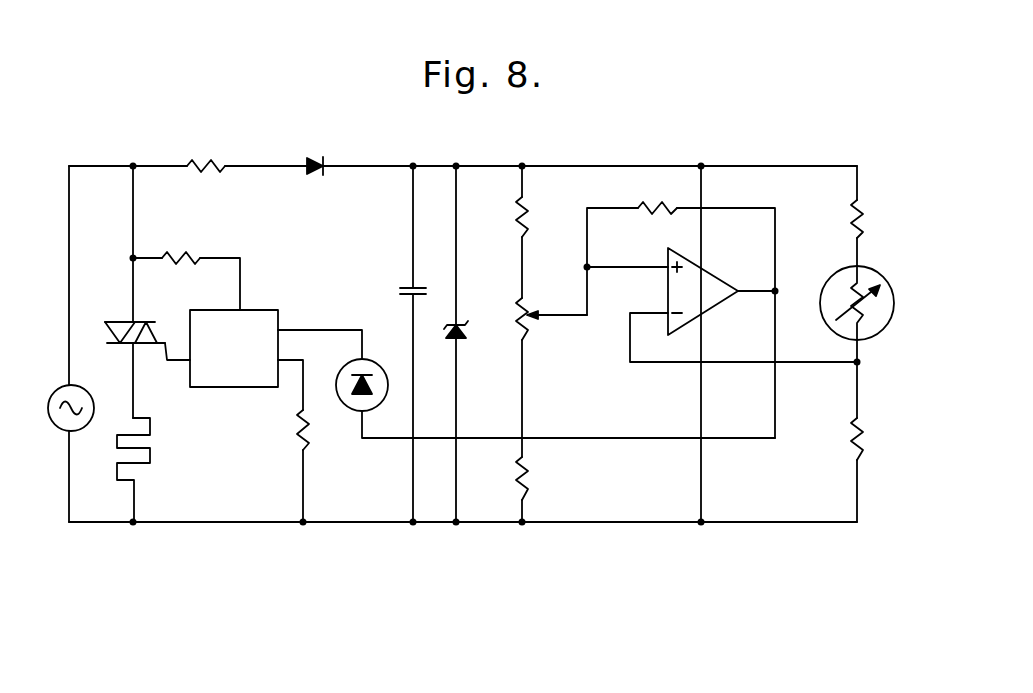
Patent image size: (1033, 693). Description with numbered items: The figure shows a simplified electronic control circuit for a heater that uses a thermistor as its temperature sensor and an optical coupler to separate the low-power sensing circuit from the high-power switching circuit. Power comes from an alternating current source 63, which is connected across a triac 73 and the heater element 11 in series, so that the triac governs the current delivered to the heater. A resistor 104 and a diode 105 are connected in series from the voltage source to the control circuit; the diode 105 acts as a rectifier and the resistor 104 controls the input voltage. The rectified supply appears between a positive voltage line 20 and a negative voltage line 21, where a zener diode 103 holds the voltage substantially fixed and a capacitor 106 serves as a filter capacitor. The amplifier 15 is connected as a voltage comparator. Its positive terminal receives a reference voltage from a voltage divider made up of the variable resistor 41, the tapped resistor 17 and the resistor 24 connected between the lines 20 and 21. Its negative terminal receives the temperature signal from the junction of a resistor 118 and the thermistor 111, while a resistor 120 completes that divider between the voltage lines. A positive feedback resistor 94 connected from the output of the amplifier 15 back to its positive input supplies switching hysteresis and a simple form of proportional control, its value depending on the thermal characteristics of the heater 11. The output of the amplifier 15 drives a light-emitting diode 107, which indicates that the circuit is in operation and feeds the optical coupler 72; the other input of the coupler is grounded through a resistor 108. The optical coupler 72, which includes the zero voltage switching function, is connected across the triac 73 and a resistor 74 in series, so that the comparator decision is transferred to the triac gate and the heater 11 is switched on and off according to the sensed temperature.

The positive voltage line 20 is at (583, 165).
The negative voltage line 21 is at (577, 523).
The resistor 104 is at (221, 167).
The diode 105 is at (333, 158).
The resistor 74 is at (191, 257).
The triac 73 is at (109, 333).
The alternating current source 63 is at (87, 426).
The heater element 11 is at (150, 462).
The optical coupler 72 is at (200, 378).
The resistor 108 is at (294, 433).
The light-emitting diode 107 is at (347, 409).
The capacitor 106 is at (407, 287).
The zener diode 103 is at (462, 318).
The variable resistor 41 is at (526, 223).
The resistor 17 is at (518, 330).
The resistor 24 is at (527, 490).
The positive feedback resistor 94 is at (650, 207).
The amplifier 15 is at (718, 273).
The resistor 118 is at (855, 208).
The thermistor 111 is at (828, 283).
The resistor 120 is at (855, 437).